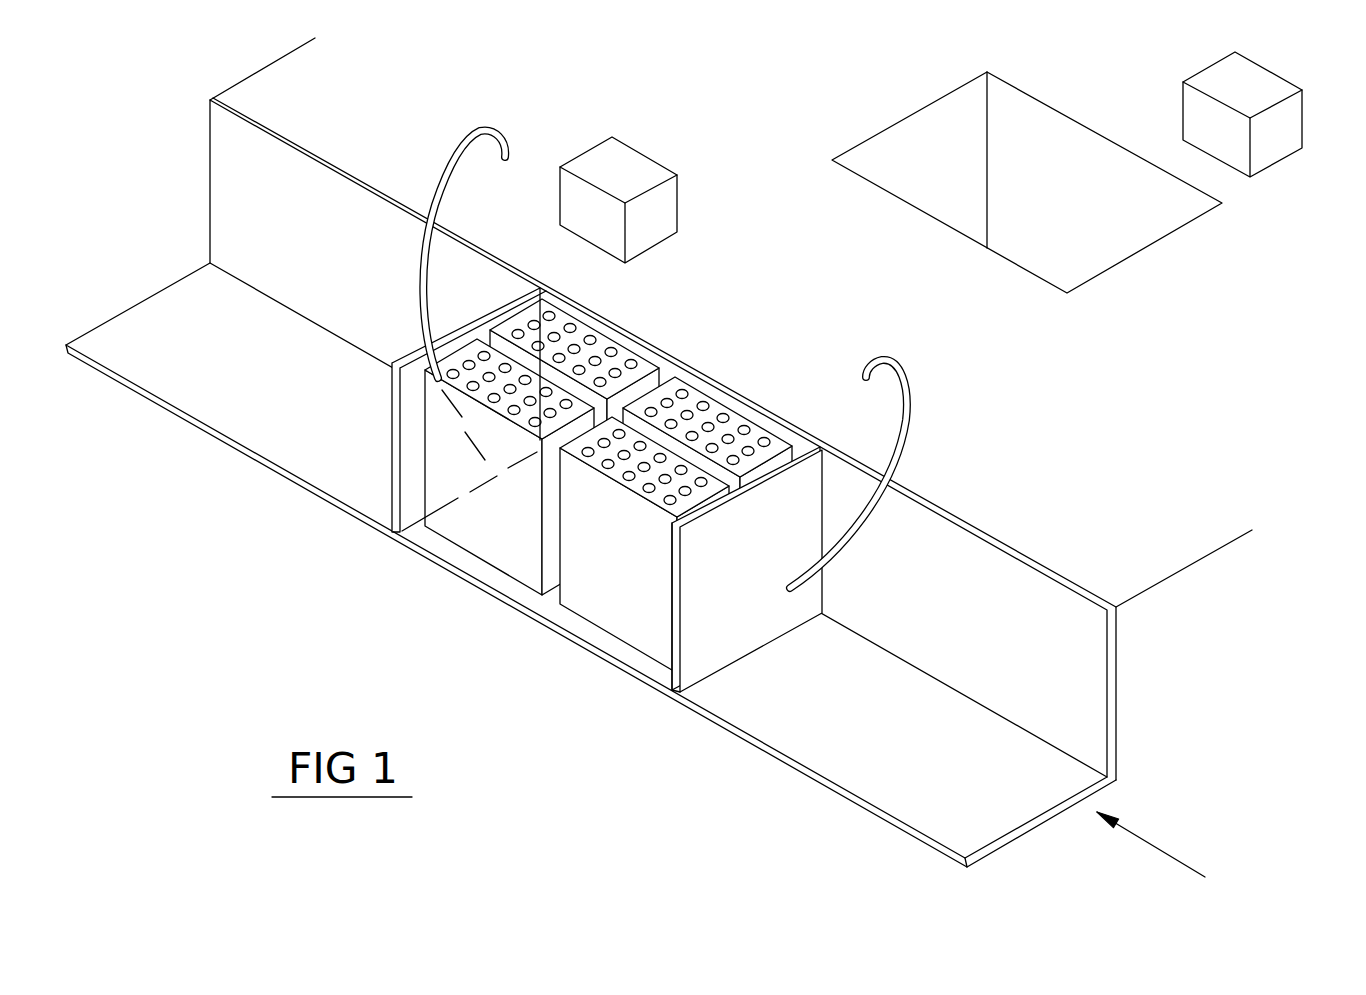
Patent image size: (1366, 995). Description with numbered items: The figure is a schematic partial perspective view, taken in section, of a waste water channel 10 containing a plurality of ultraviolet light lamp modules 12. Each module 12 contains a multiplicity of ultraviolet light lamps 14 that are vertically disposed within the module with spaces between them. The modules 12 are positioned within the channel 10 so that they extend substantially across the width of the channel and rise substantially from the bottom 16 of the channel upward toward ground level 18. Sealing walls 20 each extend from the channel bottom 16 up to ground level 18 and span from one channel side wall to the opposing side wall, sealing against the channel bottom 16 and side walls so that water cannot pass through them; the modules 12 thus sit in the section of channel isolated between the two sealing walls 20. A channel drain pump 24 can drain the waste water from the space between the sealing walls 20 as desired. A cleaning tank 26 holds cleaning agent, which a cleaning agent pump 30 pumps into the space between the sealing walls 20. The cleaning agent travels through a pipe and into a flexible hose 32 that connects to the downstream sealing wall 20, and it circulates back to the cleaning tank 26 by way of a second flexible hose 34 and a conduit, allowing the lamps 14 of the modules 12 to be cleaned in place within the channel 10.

The waste water channel 10 is at (659, 457).
The ultraviolet light lamp module 12 is at (658, 449).
The ultraviolet light lamp 14 is at (770, 437).
The channel bottom 16 is at (895, 750).
The ground level 18 is at (1027, 502).
The sealing wall 20 is at (392, 478).
The channel drain pump 24 is at (620, 140).
The cleaning tank 26 is at (880, 128).
The cleaning agent pump 30 is at (1285, 163).
The flexible hose 32 is at (464, 130).
The flexible hose 34 is at (918, 384).